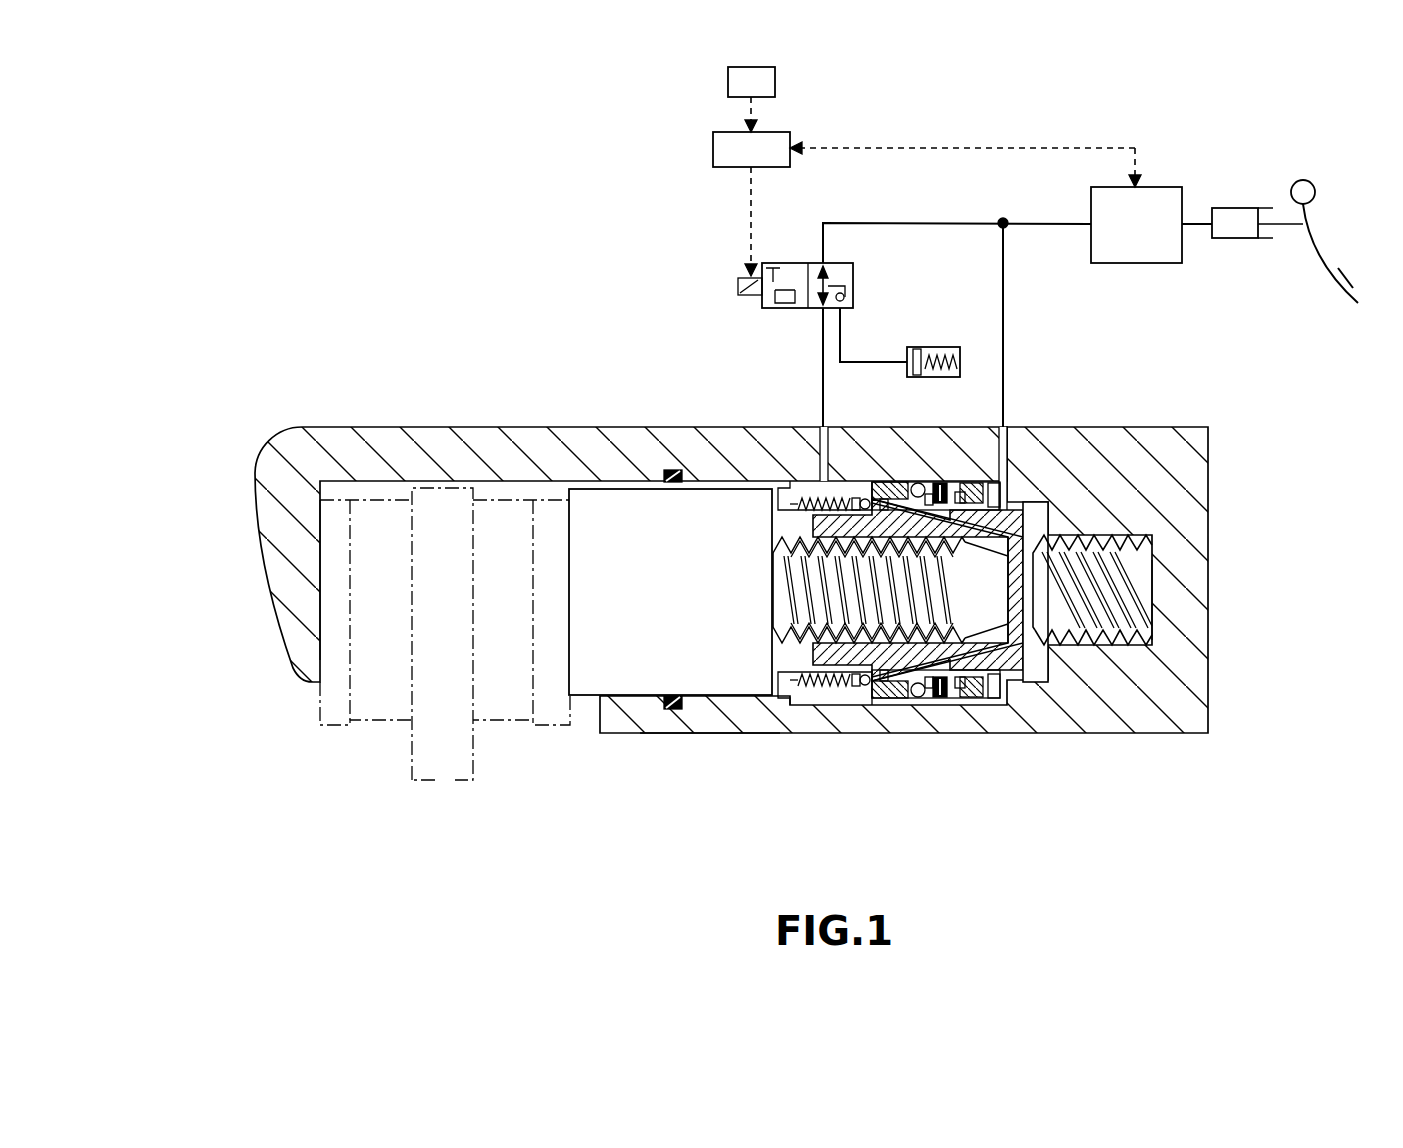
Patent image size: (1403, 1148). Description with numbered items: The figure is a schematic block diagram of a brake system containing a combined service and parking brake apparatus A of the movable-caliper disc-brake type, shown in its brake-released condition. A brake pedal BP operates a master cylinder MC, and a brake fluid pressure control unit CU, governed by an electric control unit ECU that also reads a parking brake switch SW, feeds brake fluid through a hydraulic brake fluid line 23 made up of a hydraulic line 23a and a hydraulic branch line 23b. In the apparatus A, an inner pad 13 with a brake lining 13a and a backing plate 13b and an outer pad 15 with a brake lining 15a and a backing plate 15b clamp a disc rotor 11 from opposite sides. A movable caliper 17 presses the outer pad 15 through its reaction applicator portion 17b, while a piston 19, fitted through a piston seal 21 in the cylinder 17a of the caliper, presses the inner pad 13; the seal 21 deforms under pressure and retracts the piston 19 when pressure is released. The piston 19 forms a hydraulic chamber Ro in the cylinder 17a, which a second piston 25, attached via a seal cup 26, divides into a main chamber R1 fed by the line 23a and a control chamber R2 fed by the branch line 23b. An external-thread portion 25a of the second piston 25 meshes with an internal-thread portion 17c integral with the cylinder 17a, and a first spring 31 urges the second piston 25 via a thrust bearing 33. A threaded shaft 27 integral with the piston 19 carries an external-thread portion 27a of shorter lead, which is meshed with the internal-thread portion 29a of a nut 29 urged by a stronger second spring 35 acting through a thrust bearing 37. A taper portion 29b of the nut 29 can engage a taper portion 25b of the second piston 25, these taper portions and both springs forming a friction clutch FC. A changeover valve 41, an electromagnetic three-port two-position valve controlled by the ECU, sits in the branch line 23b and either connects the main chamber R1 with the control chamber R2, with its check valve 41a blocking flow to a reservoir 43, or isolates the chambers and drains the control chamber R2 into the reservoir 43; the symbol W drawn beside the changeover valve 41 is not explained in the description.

The disc rotor 11 is at (447, 783).
The inner pad 13 is at (520, 722).
The brake lining 13a is at (505, 517).
The backing plate 13b is at (546, 498).
The outer pad 15 is at (368, 722).
The brake lining 15a is at (380, 515).
The backing plate 15b is at (337, 508).
The movable caliper 17 is at (428, 427).
The cylinder 17a is at (717, 712).
The reaction applicator portion 17b is at (290, 588).
The internal-thread portion 17c is at (1123, 645).
The piston 19 is at (621, 660).
The piston seal 21 is at (677, 709).
The hydraulic brake fluid line 23 is at (1037, 227).
The hydraulic line 23a is at (1007, 327).
The hydraulic branch line 23b is at (823, 333).
The second piston 25 is at (1012, 690).
The external-thread portion 25a is at (1090, 647).
The taper portion 25b is at (1033, 505).
The seal cup 26 is at (1000, 663).
The threaded shaft 27 is at (775, 606).
The external-thread portion 27a is at (820, 576).
The nut 29 is at (897, 665).
The internal-thread portion 29a is at (910, 483).
The taper portion 29b is at (960, 483).
The first spring 31 is at (967, 680).
The thrust bearing 33 is at (927, 667).
The second spring 35 is at (833, 686).
The thrust bearing 37 is at (860, 680).
The changeover valve 41 is at (840, 263).
The check valve 41a is at (840, 308).
The reservoir 43 is at (942, 345).
The combined service and parking brake apparatus A is at (460, 427).
The valve position W is at (866, 287).
The main chamber R1 is at (1035, 505).
The control chamber R2 is at (808, 483).
The friction clutch FC is at (895, 500).
The hydraulic chamber Ro is at (787, 653).
The parking brake switch SW is at (728, 82).
The electric control unit ECU is at (713, 148).
The brake fluid pressure control unit CU is at (1112, 187).
The master cylinder MC is at (1238, 208).
The brake pedal BP is at (1347, 283).